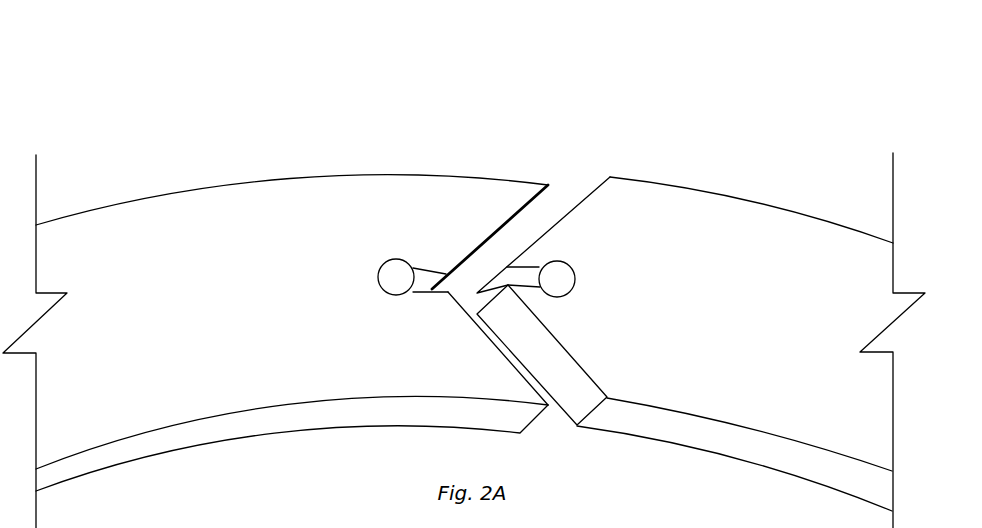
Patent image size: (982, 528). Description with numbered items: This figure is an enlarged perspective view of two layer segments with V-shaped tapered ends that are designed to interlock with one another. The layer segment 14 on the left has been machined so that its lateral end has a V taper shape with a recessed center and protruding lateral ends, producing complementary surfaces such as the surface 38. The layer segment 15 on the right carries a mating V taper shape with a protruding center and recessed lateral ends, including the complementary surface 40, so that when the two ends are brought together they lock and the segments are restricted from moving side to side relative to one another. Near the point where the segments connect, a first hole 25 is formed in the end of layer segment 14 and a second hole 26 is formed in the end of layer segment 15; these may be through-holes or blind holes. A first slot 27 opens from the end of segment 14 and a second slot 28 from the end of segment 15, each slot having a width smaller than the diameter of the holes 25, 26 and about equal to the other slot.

The layer segment 14 is at (190, 240).
The layer segment 15 is at (822, 282).
The first hole 25 is at (393, 272).
The second hole 26 is at (560, 277).
The first slot 27 is at (428, 276).
The second slot 28 is at (523, 282).
The complementary surface 38 is at (482, 328).
The complementary surface 40 is at (568, 388).